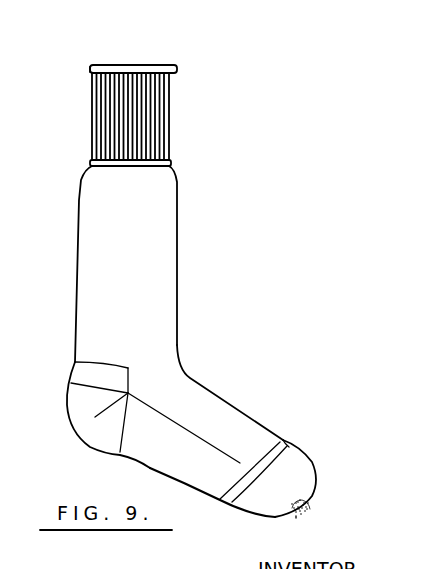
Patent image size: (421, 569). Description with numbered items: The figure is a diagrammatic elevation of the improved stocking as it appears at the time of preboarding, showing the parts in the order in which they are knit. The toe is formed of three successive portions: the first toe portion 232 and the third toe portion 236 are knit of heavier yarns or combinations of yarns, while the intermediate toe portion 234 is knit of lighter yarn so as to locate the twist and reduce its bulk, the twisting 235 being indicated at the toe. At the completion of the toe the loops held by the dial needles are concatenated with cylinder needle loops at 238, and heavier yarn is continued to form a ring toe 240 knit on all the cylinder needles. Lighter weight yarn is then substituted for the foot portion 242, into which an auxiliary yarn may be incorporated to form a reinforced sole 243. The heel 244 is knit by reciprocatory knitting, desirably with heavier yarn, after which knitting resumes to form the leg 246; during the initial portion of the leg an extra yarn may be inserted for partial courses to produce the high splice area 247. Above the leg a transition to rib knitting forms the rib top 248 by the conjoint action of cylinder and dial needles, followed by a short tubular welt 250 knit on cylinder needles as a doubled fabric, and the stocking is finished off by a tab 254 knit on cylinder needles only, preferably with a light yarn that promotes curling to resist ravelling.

The tubular welt 250 is at (143, 66).
The tab 254 is at (91, 73).
The rib top 248 is at (160, 113).
The leg 246 is at (168, 283).
The high splice area 247 is at (80, 371).
The heel 244 is at (84, 427).
The reinforced sole 243 is at (192, 444).
The foot portion 242 is at (238, 416).
The ring toe 240 is at (282, 444).
The concatenation of dial needle loops with cylinder needle loops 238 is at (288, 449).
The third toe portion 236 is at (300, 466).
The intermediate toe portion 234 is at (303, 509).
The twisting 235 is at (296, 514).
The first toe portion 232 is at (252, 499).